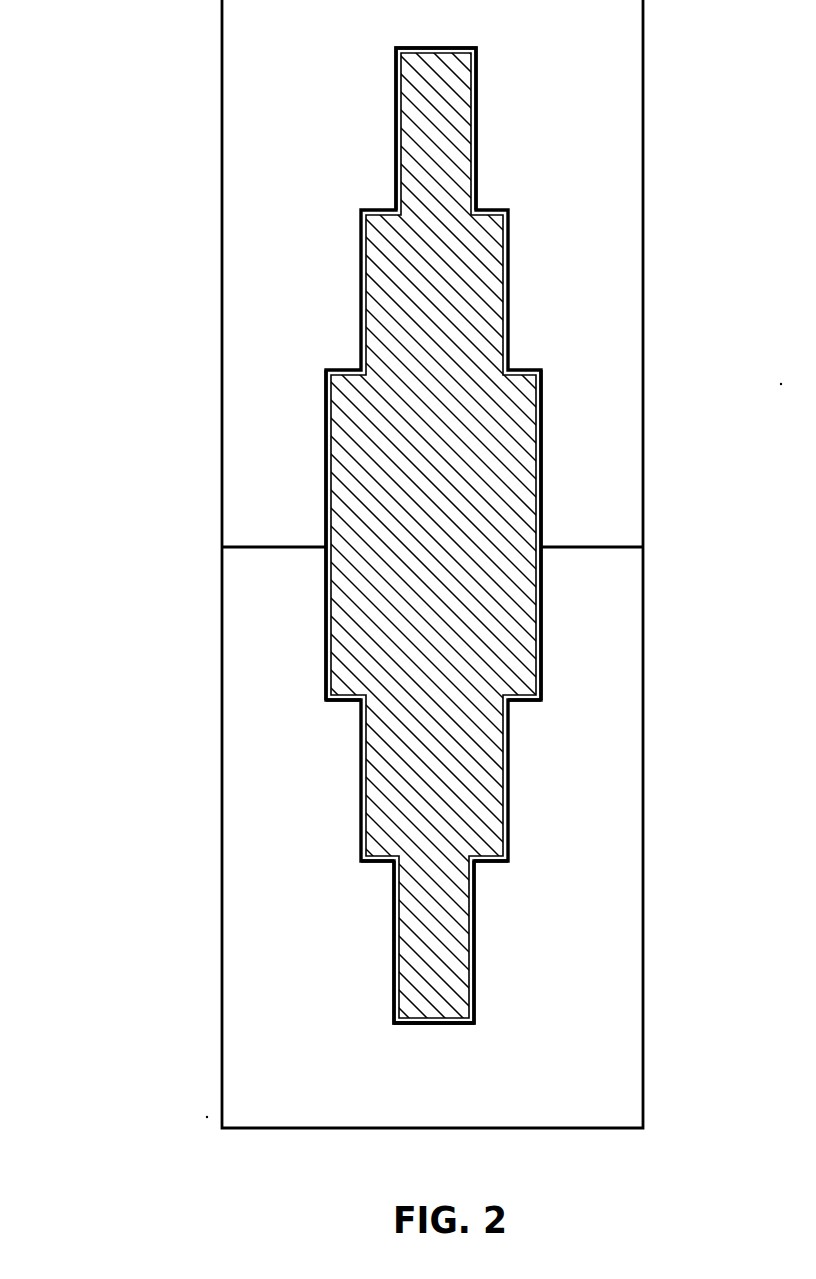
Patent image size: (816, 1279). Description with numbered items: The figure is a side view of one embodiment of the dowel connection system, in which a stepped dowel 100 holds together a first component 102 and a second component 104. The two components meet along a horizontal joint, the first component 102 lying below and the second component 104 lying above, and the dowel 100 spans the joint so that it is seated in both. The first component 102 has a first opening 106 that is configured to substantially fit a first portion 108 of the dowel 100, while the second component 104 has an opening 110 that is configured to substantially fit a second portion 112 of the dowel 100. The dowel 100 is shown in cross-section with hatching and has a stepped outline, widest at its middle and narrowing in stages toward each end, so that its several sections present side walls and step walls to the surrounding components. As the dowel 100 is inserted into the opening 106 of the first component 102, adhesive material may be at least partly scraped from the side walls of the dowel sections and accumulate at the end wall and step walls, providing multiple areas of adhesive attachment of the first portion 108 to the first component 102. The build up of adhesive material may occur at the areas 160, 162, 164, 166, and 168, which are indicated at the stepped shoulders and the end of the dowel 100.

The dowel 100 is at (408, 600).
The first component 102 is at (222, 1090).
The second component 104 is at (643, 218).
The first opening 106 is at (393, 1007).
The first portion 108 is at (459, 668).
The opening 110 is at (478, 88).
The second portion 112 is at (464, 440).
The area of adhesive build up 160 is at (450, 1025).
The area of adhesive build up 162 is at (383, 866).
The area of adhesive build up 164 is at (512, 870).
The area of adhesive build up 166 is at (347, 705).
The area of adhesive build up 168 is at (530, 705).